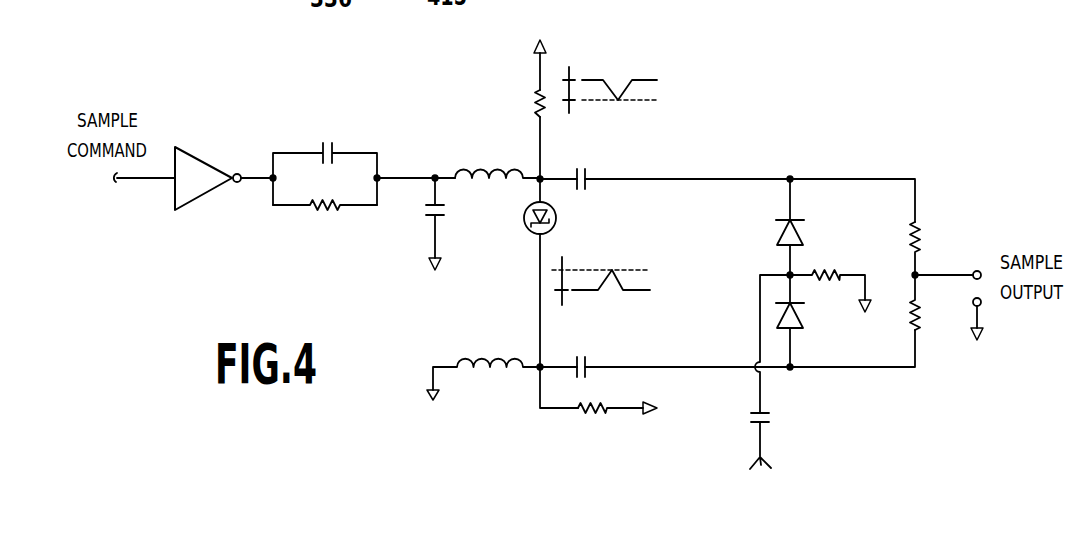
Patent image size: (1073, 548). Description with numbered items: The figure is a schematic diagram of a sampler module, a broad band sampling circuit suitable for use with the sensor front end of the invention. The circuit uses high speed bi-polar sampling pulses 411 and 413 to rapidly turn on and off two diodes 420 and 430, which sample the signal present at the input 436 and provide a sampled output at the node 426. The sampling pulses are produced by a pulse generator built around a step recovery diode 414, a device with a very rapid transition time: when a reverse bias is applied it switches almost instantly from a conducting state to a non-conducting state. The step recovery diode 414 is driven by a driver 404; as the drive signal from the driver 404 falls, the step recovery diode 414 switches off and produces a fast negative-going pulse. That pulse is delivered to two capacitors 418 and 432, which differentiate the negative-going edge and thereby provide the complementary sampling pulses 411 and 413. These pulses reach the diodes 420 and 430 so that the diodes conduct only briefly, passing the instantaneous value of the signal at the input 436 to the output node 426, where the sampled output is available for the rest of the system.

The driver 404 is at (206, 162).
The sampling pulse 411 is at (638, 58).
The sampling pulse 413 is at (655, 276).
The step recovery diode 414 is at (524, 222).
The capacitor 418 is at (588, 176).
The diode 420 is at (804, 238).
The node 426 is at (977, 270).
The diode 430 is at (803, 320).
The capacitor 432 is at (590, 363).
The input 436 is at (768, 463).